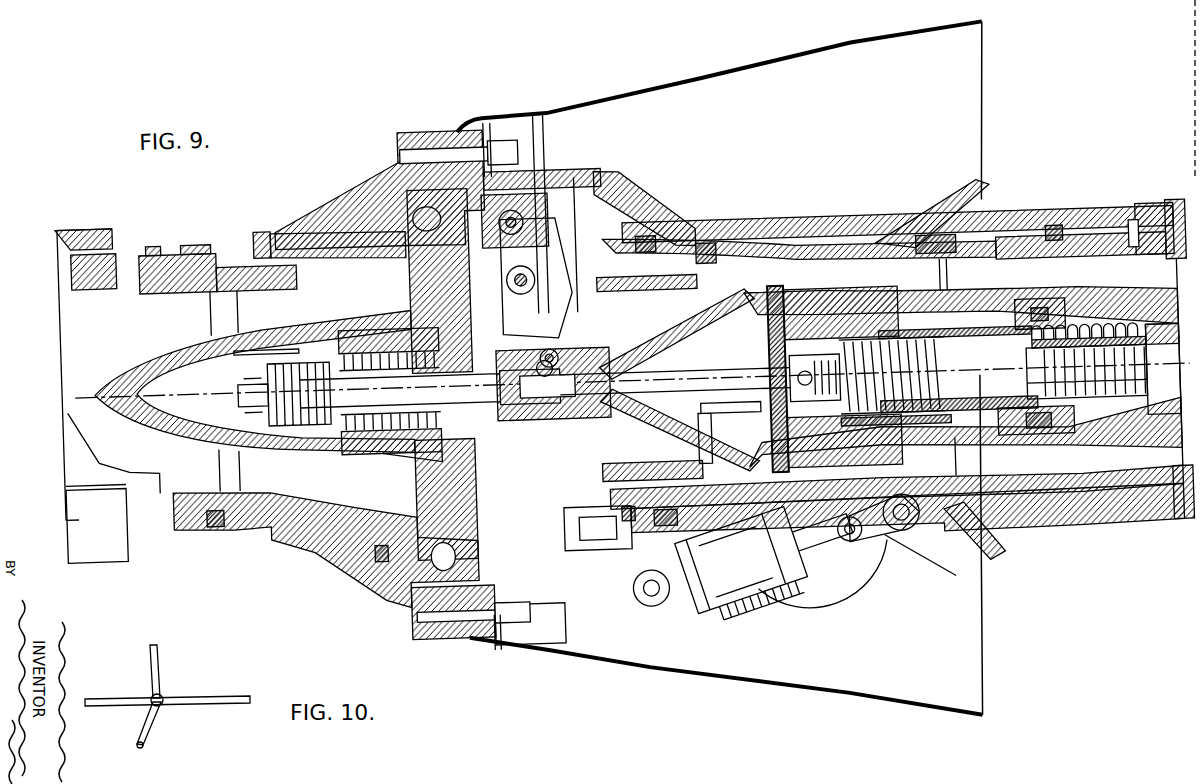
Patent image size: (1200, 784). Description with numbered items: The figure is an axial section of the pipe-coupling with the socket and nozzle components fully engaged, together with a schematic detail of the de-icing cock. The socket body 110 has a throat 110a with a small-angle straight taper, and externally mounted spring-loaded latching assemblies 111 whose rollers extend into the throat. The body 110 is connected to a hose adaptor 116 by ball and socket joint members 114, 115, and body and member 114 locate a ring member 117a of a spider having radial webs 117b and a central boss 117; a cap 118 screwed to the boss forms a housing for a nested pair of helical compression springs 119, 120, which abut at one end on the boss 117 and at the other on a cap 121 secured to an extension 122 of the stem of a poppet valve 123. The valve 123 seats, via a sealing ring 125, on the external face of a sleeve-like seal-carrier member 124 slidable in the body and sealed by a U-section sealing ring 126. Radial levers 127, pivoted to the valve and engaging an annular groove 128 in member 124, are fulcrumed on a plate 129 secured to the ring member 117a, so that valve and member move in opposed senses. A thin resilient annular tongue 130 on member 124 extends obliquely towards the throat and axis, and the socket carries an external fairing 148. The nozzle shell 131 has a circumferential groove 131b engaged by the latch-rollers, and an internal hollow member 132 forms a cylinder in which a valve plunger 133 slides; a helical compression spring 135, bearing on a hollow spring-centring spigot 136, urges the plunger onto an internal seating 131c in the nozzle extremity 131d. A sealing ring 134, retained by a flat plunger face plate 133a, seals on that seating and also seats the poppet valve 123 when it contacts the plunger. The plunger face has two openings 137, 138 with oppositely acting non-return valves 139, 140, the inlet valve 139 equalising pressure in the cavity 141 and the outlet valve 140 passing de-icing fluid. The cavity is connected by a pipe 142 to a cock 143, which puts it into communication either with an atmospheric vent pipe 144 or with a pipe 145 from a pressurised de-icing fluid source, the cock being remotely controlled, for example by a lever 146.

In FIG. 9, the socket body 110 is at (828, 222).
In FIG. 9, the throat 110a is at (905, 248).
In FIG. 9, the spring-loaded latching assembly 111 is at (840, 590).
In FIG. 9, the ball and socket joint member 114 is at (268, 218).
In FIG. 9, the ball and socket joint member 115 is at (328, 222).
In FIG. 9, the hose adaptor 116 is at (129, 523).
In FIG. 9, the central boss 117 is at (405, 448).
In FIG. 9, the ring member 117a is at (412, 572).
In FIG. 9, the radial webs 117b is at (445, 280).
In FIG. 9, the cap 118 is at (131, 357).
In FIG. 9, the helical compression spring 119 is at (290, 350).
In FIG. 9, the helical compression spring 120 is at (355, 410).
In FIG. 9, the cap 121 is at (225, 325).
In FIG. 9, the stem extension 122 is at (343, 318).
In FIG. 9, the poppet valve 123 is at (518, 405).
In FIG. 9, the seal-carrier member 124 is at (540, 205).
In FIG. 9, the sealing ring 125 is at (697, 432).
In FIG. 9, the U-section sealing ring 126 is at (655, 236).
In FIG. 9, the lever 127 is at (395, 180).
In FIG. 9, the annular groove 128 is at (478, 140).
In FIG. 9, the plate 129 is at (620, 195).
In FIG. 9, the annular tongue 130 is at (770, 240).
In FIG. 9, the shell 131 is at (1010, 248).
In FIG. 9, the circumferential groove 131b is at (935, 244).
In FIG. 9, the internal seating 131c is at (784, 298).
In FIG. 9, the nozzle extremity 131d is at (618, 508).
In FIG. 9, the internal hollow member 132 is at (1035, 528).
In FIG. 9, the valve plunger 133 is at (850, 445).
In FIG. 9, the plunger face plate 133a is at (712, 318).
In FIG. 9, the sealing ring 134 is at (832, 318).
In FIG. 9, the helical compression spring 135 is at (951, 407).
In FIG. 9, the spring-centring spigot 136 is at (1027, 380).
In FIG. 9, the opening 137 is at (790, 368).
In FIG. 9, the opening 138 is at (790, 396).
In FIG. 9, the non-return valve 139 is at (866, 345).
In FIG. 9, the non-return valve 140 is at (866, 402).
In FIG. 9, the cavity 141 is at (1040, 342).
In FIG. 10, the pipe 142 is at (118, 706).
In FIG. 10, the cock 143 is at (151, 694).
In FIG. 10, the atmospheric vent pipe 144 is at (162, 670).
In FIG. 10, the pipe 145 is at (238, 697).
In FIG. 10, the lever 146 is at (154, 718).
In FIG. 9, the external fairing 148 is at (790, 684).